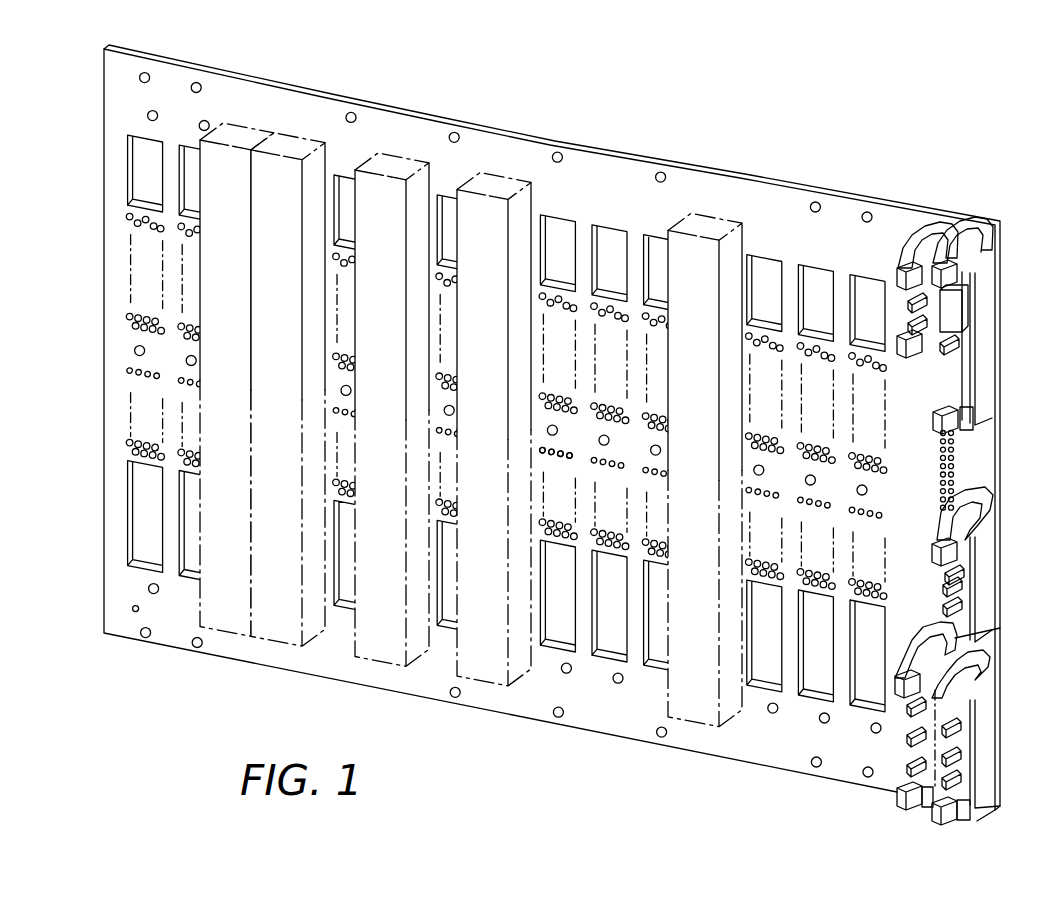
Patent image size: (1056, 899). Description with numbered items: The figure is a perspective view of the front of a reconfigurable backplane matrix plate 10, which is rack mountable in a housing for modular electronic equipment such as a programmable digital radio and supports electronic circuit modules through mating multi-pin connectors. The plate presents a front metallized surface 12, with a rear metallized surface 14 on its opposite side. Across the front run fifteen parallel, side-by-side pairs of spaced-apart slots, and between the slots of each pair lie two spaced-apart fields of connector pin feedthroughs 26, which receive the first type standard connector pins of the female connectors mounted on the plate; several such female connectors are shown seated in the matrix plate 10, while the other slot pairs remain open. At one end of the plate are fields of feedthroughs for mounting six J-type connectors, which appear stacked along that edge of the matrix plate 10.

The backplane matrix plate 10 is at (867, 90).
The front metallized surface 12 is at (594, 162).
The rear metallized surface 14 is at (647, 157).
The connector pin feedthroughs 26 is at (130, 318).